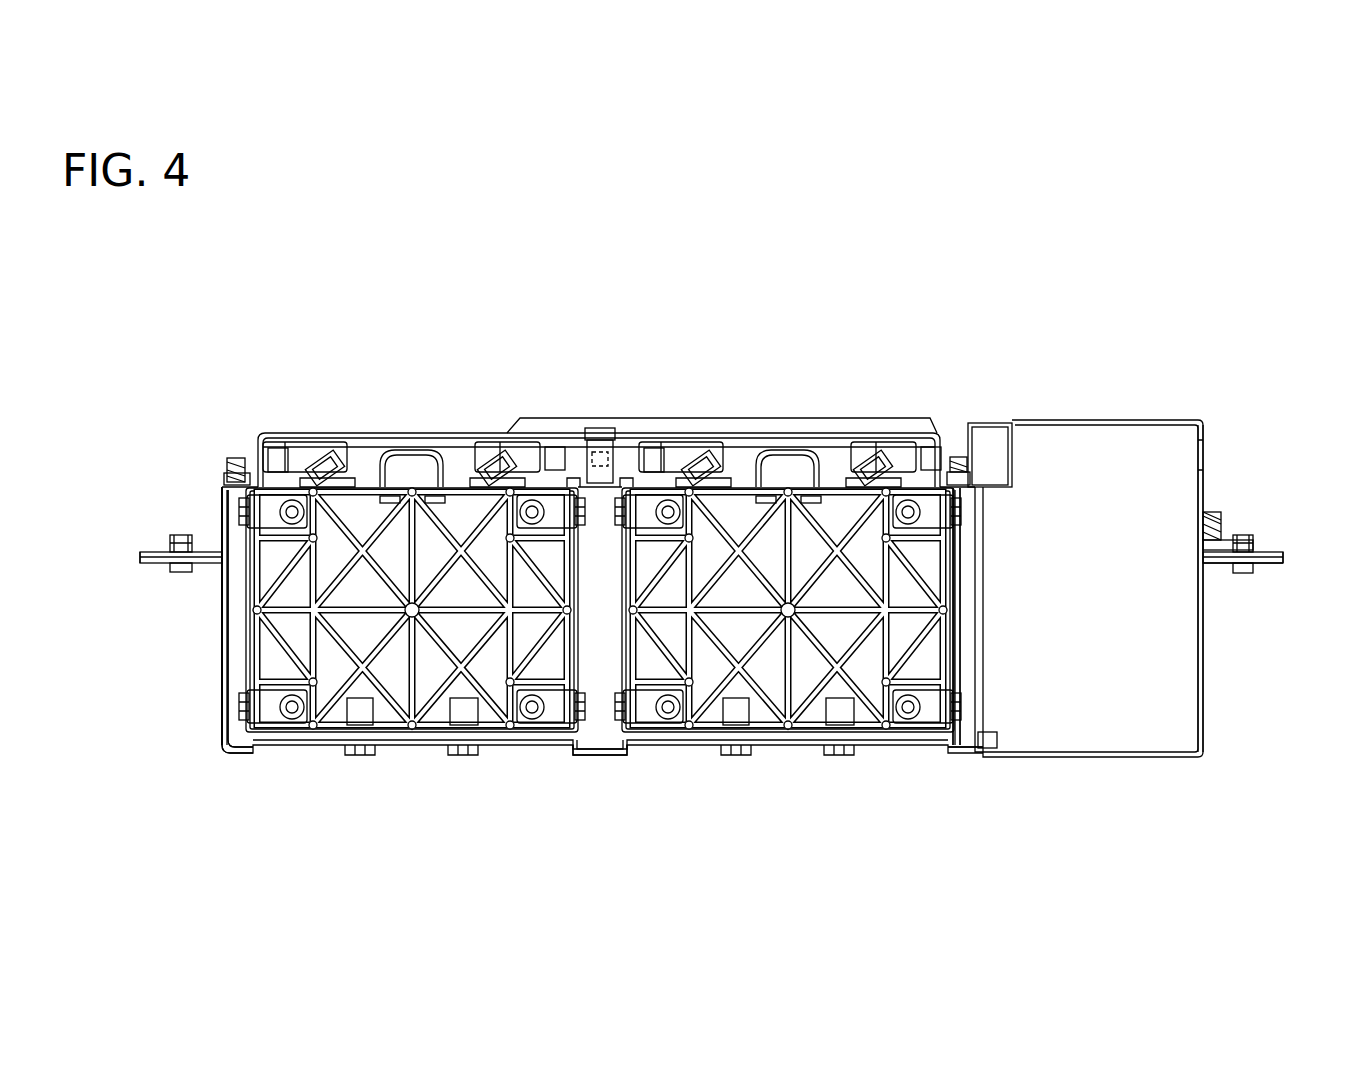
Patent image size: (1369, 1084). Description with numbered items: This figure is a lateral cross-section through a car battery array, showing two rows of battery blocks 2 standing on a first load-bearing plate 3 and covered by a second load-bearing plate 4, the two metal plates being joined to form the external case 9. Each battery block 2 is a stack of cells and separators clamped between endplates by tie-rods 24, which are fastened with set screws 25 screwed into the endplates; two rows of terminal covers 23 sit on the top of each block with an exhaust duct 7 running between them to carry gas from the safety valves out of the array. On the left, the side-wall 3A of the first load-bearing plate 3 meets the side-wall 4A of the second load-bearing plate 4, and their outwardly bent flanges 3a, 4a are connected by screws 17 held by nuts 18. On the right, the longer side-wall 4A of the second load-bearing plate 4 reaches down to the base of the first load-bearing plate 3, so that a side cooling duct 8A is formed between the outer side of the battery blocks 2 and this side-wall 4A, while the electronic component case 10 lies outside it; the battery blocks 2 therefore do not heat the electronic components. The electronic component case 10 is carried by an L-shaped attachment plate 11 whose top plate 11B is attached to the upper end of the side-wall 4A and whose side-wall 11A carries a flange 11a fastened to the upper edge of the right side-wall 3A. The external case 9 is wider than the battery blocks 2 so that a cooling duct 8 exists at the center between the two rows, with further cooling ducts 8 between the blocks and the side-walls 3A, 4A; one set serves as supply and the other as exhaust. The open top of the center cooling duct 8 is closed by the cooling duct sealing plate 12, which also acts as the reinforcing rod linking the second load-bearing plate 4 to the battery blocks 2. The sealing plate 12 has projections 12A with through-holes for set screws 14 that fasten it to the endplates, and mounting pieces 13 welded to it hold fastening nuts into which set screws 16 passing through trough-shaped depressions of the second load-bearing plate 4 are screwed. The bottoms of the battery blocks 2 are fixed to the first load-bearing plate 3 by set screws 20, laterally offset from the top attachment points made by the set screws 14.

The battery block 2 is at (235, 588).
The first load-bearing plate 3 is at (585, 755).
The side-wall of the first load-bearing plate 3A is at (225, 618).
The flange 3a is at (150, 573).
The second load-bearing plate 4 is at (462, 433).
The side-wall of the second load-bearing plate 4A is at (220, 510).
The flange 4a is at (152, 553).
The exhaust duct 7 is at (373, 433).
The cooling duct 8 is at (600, 655).
The side cooling duct 8A is at (245, 634).
The external case 9 is at (842, 392).
The electronic component case 10 is at (1113, 685).
The attachment plate 11 is at (1286, 302).
The side-wall of the attachment plate 11A is at (1203, 480).
The top plate of the attachment plate 11B is at (1100, 420).
The flange of the attachment plate 11a is at (1270, 550).
The cooling duct sealing plate 12 is at (623, 447).
The projection 12A is at (532, 425).
The mounting piece 13 is at (592, 487).
The set screw 14 is at (542, 447).
The set screw 16 is at (597, 418).
The screw 17 is at (183, 573).
The nut 18 is at (178, 535).
The set screw 20 is at (362, 755).
The terminal cover 23 is at (478, 447).
The tie-rod 24 is at (240, 755).
The set screw 25 is at (295, 717).